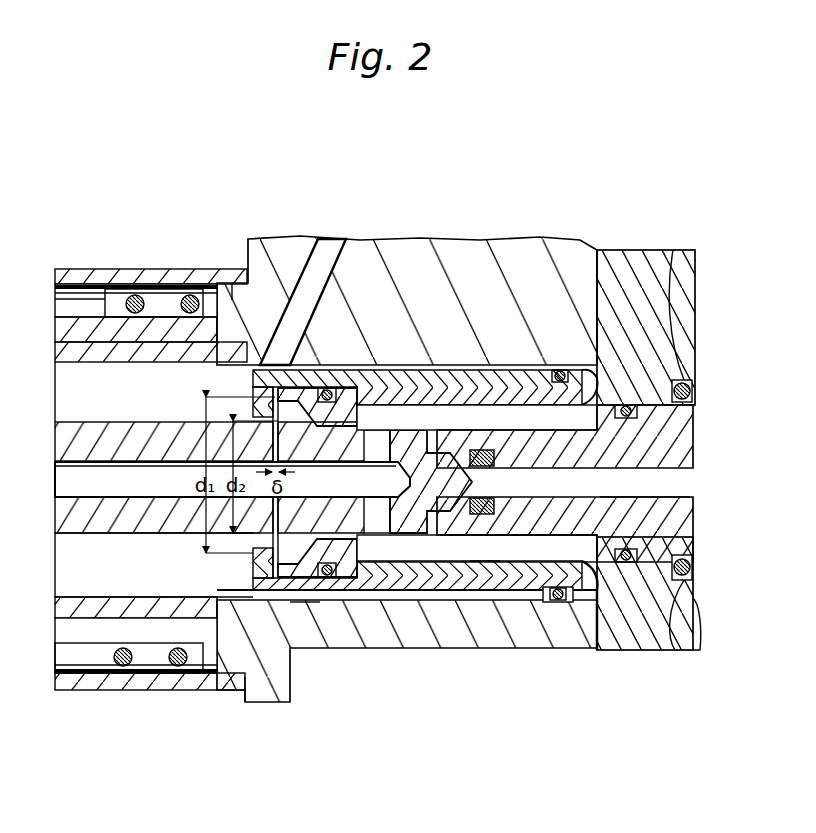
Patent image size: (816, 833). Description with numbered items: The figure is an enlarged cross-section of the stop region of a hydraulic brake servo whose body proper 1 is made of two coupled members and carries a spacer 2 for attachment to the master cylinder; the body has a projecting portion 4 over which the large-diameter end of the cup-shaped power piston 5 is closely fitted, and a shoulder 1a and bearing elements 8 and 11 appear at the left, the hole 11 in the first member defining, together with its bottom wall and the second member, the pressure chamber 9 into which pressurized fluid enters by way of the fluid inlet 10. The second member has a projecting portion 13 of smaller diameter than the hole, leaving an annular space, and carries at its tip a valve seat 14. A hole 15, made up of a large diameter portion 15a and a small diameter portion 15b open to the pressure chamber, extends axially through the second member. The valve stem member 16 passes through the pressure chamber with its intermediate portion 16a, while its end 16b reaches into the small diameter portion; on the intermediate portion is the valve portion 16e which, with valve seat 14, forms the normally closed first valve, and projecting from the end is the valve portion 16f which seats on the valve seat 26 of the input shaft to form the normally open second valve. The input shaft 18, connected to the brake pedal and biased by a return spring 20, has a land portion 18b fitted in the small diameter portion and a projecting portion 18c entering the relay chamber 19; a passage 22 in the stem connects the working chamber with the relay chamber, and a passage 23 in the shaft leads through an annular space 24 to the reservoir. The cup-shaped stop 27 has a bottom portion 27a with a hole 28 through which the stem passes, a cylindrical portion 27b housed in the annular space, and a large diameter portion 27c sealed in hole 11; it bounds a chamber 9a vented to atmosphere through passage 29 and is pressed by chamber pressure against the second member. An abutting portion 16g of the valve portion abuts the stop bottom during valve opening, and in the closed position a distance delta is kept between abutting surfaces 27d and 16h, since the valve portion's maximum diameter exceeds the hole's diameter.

The body proper 1 is at (642, 258).
The housing shoulder 1a is at (232, 300).
The spacer 2 is at (84, 272).
The projecting portion 4 is at (93, 610).
The power piston 5 is at (98, 322).
The ball bearing 8 is at (135, 295).
The pressure chamber 9 is at (162, 362).
The chamber 9a is at (590, 375).
The fluid inlet 10 is at (336, 256).
The hole 11 is at (190, 295).
The projecting portion 13 is at (376, 592).
The valve seat 14 is at (330, 602).
The hole 15 is at (697, 722).
The large diameter portion 15a is at (680, 640).
The small diameter portion 15b is at (652, 610).
The valve stem member 16 is at (124, 518).
The intermediate portion 16a is at (182, 520).
The end 16b is at (408, 540).
The valve portion 16e is at (304, 602).
The valve portion 16f is at (440, 562).
The abutting portion 16g is at (265, 702).
The abutting surface 16h is at (240, 702).
The input shaft 18 is at (688, 450).
The land portion 18b is at (646, 520).
The projecting portion 18c is at (536, 520).
The relay chamber 19 is at (530, 602).
The return spring 20 is at (676, 280).
The passage 22 is at (156, 498).
The passage 23 is at (578, 520).
The annular space 24 is at (700, 645).
The valve seat 26 is at (486, 564).
The stop 27 is at (372, 376).
The bottom portion 27a is at (252, 384).
The cylindrical portion 27b is at (440, 397).
The large diameter portion 27c is at (559, 369).
The abutting surface 27d is at (327, 388).
The hole 28 is at (252, 568).
The passage 29 is at (594, 652).